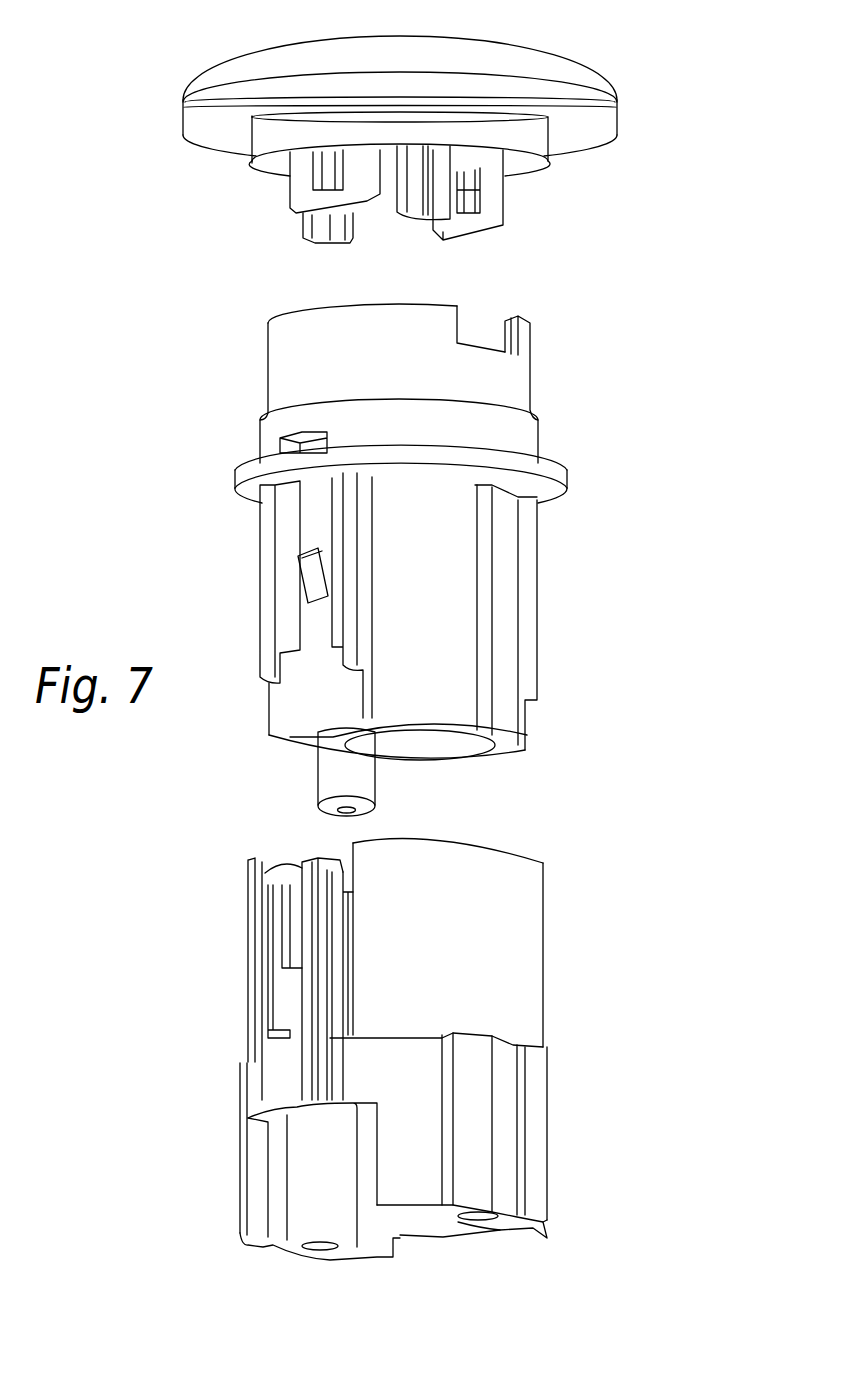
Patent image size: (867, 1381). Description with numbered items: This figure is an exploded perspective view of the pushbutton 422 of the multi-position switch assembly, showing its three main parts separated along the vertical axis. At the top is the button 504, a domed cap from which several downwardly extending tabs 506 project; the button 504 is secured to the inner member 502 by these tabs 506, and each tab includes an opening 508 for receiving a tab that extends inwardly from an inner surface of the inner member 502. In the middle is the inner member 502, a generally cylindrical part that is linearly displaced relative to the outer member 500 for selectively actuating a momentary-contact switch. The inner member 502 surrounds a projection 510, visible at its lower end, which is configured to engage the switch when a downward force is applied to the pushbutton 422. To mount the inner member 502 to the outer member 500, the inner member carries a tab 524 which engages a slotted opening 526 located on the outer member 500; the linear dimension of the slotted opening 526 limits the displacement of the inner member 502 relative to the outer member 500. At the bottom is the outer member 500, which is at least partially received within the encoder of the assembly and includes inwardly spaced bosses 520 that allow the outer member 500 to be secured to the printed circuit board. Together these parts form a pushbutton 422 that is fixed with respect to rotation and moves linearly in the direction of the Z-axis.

The pushbutton 422 is at (662, 41).
The button 504 is at (433, 139).
The tabs 506 is at (472, 222).
The opening 508 is at (472, 198).
The inner member 502 is at (427, 560).
The tab 524 is at (310, 578).
The projection 510 is at (340, 785).
The outer member 500 is at (421, 1068).
The slotted opening 526 is at (292, 925).
The bosses 520 is at (318, 1173).